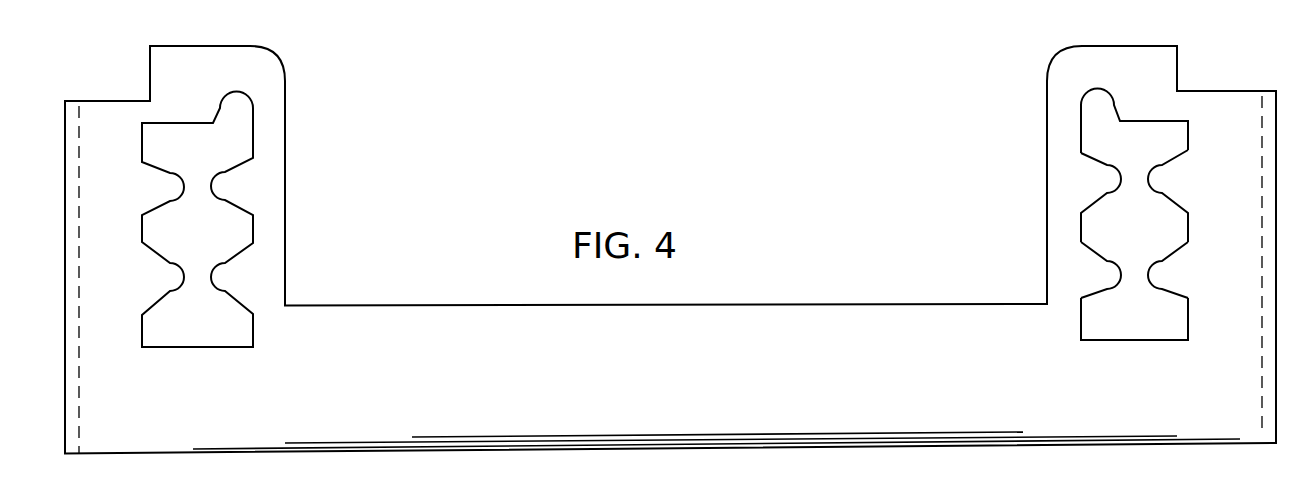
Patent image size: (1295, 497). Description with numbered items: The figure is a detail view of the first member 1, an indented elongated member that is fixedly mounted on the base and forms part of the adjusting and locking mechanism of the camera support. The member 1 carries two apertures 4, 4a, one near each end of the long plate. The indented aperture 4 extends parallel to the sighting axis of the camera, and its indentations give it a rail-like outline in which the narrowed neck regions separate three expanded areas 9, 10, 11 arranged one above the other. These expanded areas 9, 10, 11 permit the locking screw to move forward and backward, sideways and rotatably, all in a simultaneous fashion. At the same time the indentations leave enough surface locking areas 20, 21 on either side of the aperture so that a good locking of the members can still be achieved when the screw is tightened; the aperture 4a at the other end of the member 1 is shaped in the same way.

The first member 1 is at (611, 450).
The indented aperture 4 is at (1140, 215).
The aperture 4a is at (153, 228).
The expanded area 9 is at (1141, 152).
The expanded area 10 is at (1149, 235).
The expanded area 11 is at (1134, 326).
The surface locking area 20 is at (1188, 283).
The surface locking area 21 is at (1108, 283).